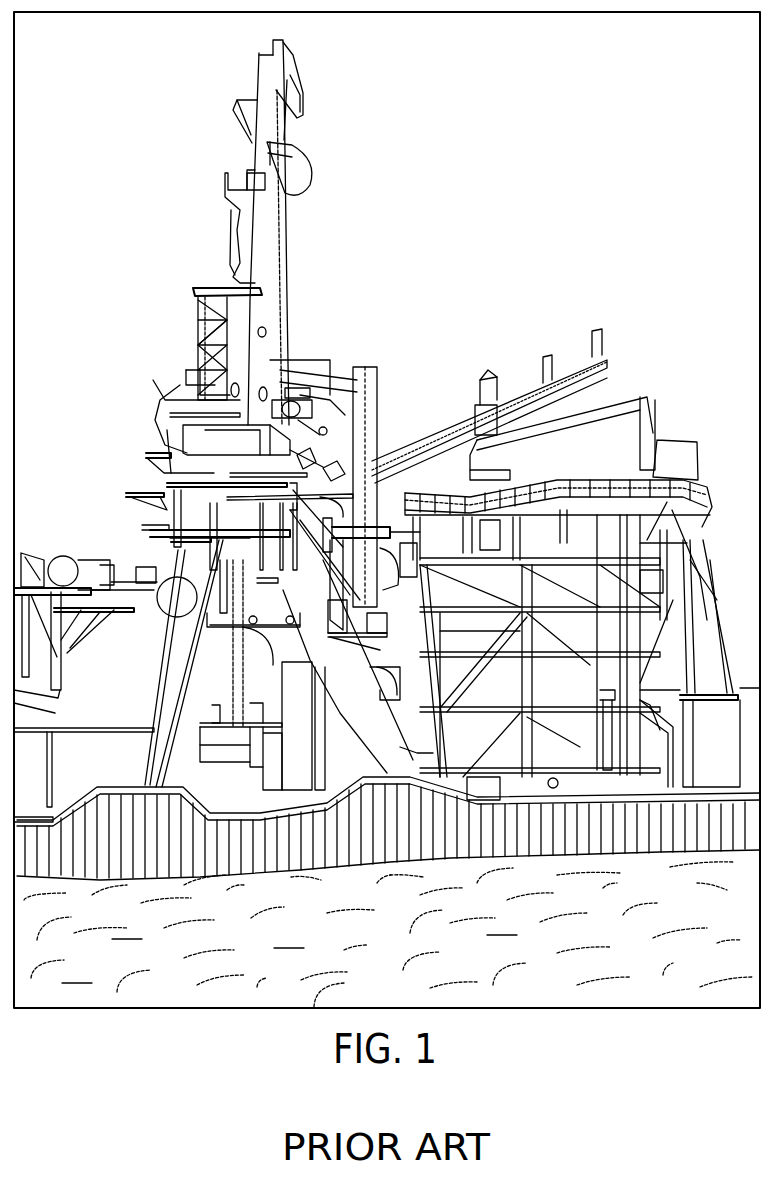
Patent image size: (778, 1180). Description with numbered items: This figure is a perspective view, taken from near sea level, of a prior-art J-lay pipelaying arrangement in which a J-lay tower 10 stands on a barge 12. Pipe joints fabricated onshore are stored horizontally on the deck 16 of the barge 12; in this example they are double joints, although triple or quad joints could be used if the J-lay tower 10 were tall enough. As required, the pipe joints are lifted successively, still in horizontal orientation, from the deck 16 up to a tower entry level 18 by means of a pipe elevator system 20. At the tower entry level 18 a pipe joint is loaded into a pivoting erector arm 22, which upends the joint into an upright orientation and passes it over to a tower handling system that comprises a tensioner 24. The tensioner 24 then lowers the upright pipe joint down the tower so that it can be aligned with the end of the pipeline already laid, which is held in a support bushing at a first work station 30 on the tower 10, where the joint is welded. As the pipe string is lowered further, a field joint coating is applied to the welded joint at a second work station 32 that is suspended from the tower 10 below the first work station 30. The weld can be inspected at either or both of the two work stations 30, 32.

The J-lay tower 10 is at (218, 236).
The barge 12 is at (500, 855).
The deck 16 is at (545, 735).
The tower entry level 18 is at (290, 412).
The pipe elevator system 20 is at (600, 470).
The pivoting erector arm 22 is at (572, 362).
The tensioner 24 is at (307, 157).
The first work station 30 is at (170, 396).
The second work station 32 is at (205, 735).